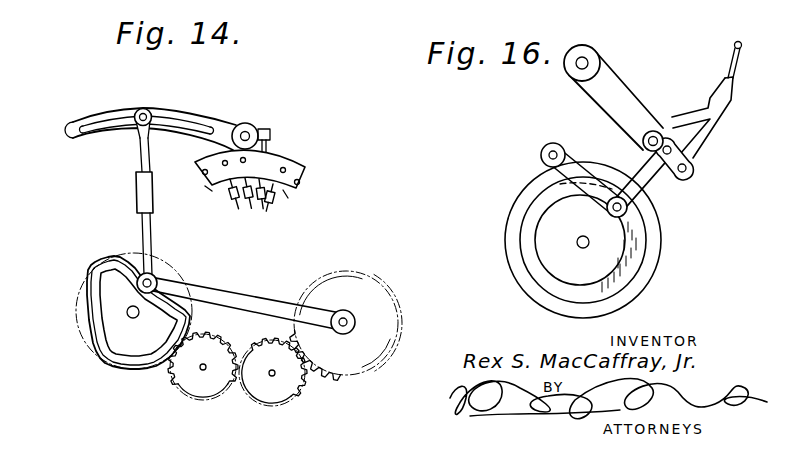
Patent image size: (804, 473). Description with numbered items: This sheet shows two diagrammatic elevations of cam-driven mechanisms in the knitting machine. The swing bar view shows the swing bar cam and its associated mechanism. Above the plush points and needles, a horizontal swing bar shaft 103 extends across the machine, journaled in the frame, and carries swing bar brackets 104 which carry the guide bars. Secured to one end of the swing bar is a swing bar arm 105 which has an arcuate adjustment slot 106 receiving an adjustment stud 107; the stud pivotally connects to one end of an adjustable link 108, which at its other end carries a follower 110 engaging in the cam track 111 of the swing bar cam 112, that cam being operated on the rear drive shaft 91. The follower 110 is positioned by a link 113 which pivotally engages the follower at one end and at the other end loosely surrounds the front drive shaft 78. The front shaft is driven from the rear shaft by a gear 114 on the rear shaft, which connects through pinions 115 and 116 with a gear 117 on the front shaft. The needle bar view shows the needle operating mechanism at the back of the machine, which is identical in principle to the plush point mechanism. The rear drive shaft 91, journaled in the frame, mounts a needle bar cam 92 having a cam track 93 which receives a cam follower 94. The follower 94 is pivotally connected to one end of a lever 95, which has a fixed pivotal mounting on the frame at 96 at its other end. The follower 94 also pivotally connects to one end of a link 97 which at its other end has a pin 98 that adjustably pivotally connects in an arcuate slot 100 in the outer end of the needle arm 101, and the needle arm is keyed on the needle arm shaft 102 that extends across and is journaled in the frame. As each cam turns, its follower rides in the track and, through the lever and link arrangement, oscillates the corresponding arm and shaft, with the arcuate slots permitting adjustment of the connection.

In FIG. 14, the front drive shaft 78 is at (344, 316).
In FIG. 14, the rear drive shaft 91 is at (133, 318).
In FIG. 16, the rear drive shaft 91 is at (578, 241).
In FIG. 16, the needle bar cam 92 is at (655, 260).
In FIG. 16, the cam track 93 is at (613, 280).
In FIG. 16, the cam follower 94 is at (628, 207).
In FIG. 16, the lever 95 is at (578, 176).
In FIG. 16, the fixed pivotal mounting 96 is at (543, 159).
In FIG. 16, the link 97 is at (692, 184).
In FIG. 16, the pin 98 is at (656, 130).
In FIG. 16, the arcuate slot 100 is at (688, 167).
In FIG. 16, the needle arm 101 is at (618, 90).
In FIG. 16, the needle arm shaft 102 is at (587, 62).
In FIG. 14, the swing bar shaft 103 is at (250, 133).
In FIG. 14, the swing bar brackets 104 is at (293, 170).
In FIG. 14, the swing bar arm 105 is at (219, 119).
In FIG. 14, the arcuate adjustment slot 106 is at (173, 122).
In FIG. 14, the adjustment stud 107 is at (143, 108).
In FIG. 14, the adjustable link 108 is at (137, 195).
In FIG. 14, the follower 110 is at (152, 282).
In FIG. 14, the cam track 111 is at (97, 353).
In FIG. 14, the swing bar cam 112 is at (88, 276).
In FIG. 14, the link 113 is at (237, 293).
In FIG. 14, the gear 114 is at (155, 368).
In FIG. 14, the pinion 115 is at (205, 383).
In FIG. 14, the pinion 116 is at (283, 392).
In FIG. 14, the gear 117 is at (367, 355).